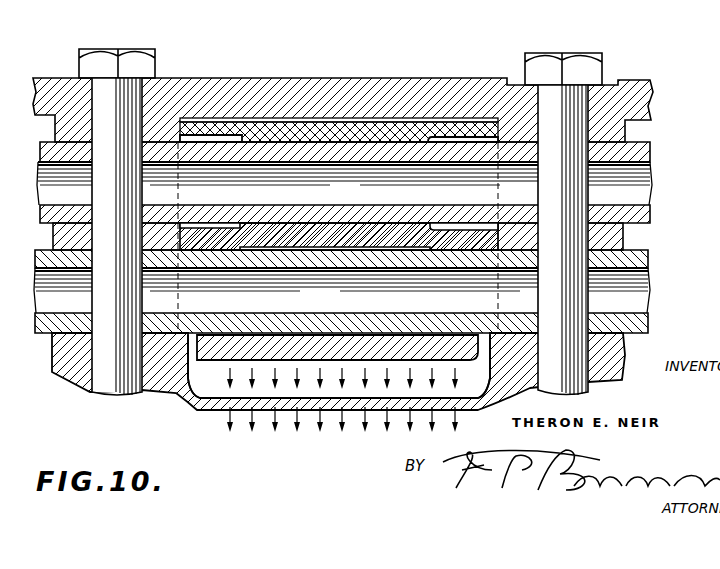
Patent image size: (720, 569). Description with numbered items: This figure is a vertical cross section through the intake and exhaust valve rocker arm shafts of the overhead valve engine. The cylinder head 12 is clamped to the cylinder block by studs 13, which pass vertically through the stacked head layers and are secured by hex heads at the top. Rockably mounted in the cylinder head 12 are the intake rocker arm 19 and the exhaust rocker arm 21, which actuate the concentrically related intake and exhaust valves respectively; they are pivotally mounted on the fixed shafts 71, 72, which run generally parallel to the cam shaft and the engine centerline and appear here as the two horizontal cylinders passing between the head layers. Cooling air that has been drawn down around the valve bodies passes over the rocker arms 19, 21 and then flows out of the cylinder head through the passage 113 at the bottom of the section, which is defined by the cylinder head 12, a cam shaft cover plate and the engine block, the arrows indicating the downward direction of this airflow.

The cylinder head 12 is at (651, 97).
The studs 13 is at (140, 67).
The exhaust rocker arm 21 is at (460, 124).
The intake rocker arm 19 is at (234, 223).
The fixed shaft 72 is at (650, 158).
The fixed shaft 71 is at (648, 265).
The passage 113 is at (203, 383).